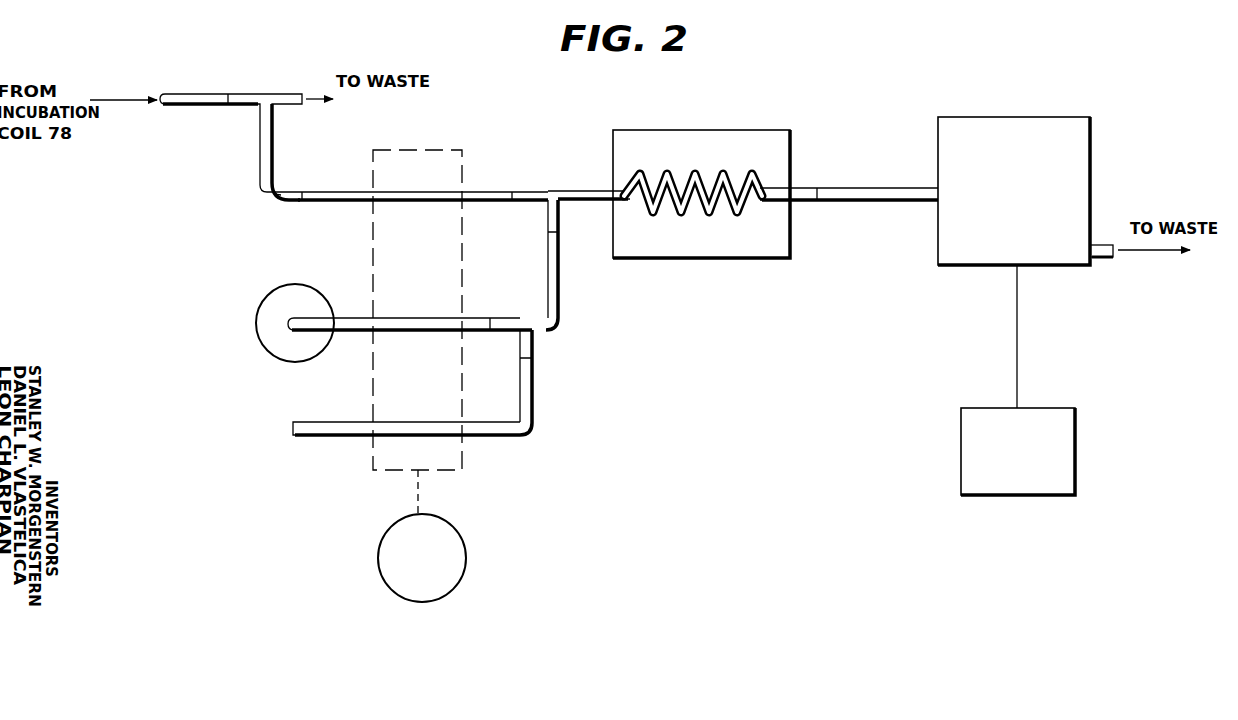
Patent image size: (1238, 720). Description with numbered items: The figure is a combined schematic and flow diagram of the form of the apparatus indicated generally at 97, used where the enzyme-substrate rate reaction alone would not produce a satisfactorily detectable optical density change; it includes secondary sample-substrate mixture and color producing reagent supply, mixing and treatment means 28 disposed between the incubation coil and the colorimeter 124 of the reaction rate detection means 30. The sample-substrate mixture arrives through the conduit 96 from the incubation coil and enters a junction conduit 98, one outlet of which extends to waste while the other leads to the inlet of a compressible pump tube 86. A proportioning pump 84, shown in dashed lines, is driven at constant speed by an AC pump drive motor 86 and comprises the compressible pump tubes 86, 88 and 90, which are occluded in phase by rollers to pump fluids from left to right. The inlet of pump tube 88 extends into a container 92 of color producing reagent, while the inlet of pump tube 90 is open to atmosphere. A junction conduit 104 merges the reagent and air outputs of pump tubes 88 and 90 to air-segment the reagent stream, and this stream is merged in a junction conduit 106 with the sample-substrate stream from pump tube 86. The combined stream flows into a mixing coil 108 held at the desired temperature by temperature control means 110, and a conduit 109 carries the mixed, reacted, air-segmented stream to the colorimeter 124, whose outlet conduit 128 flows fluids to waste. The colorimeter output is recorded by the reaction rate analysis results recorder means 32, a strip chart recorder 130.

The secondary sample-substrate mixture and color producing reagent supply, mixing an 28 is at (460, 334).
The reaction rate detection means 30 is at (1041, 108).
The reaction rate analysis results recorder means 32 is at (1014, 500).
The proportioning pump 84 is at (462, 277).
The pump drive motor / compressible pump tube 86 is at (410, 191).
The compressible pump tube 88 is at (410, 317).
The compressible pump tube 90 is at (410, 421).
The container 92 is at (314, 285).
The conduit 96 is at (190, 93).
The apparatus form with secondary reaction circuit 97 is at (726, 138).
The junction conduit 98 is at (277, 93).
The junction conduit 104 is at (556, 328).
The junction conduit 106 is at (553, 190).
The mixing coil 108 is at (700, 172).
The conduit 109 is at (869, 187).
The temperature control means 110 is at (674, 130).
The colorimeter 124 is at (1092, 150).
The colorimeter outlet conduit 128 is at (1109, 259).
The strip chart recorder 130 is at (1077, 481).